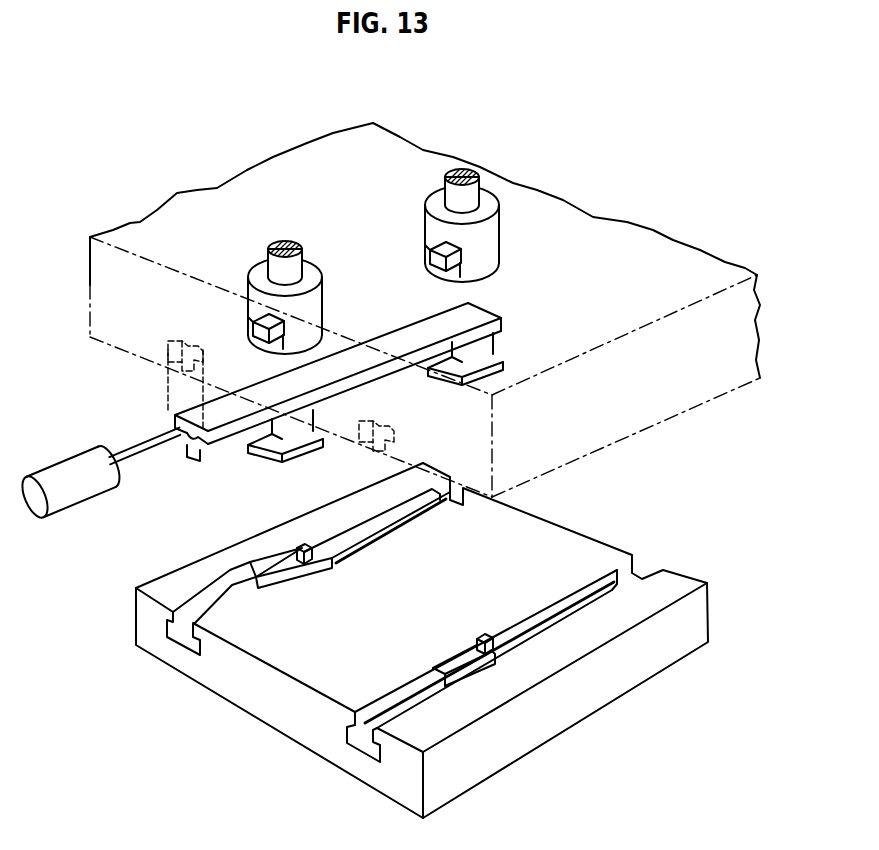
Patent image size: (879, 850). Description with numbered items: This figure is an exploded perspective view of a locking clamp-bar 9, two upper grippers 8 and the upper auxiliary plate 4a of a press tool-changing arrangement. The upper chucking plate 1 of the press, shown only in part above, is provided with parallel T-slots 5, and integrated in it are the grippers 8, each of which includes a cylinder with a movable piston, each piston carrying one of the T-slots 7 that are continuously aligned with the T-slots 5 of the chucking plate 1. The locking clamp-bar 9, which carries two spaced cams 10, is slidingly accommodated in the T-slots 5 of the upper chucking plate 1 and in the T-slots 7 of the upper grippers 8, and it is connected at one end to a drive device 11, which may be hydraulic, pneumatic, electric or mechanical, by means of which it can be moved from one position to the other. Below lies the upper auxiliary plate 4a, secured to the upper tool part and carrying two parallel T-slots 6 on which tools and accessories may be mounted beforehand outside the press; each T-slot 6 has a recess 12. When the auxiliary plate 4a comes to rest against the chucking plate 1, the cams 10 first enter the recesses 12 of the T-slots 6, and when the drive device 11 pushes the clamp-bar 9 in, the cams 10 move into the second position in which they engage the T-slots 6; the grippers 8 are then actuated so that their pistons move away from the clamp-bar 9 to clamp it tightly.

The upper chucking plate 1 is at (672, 263).
The upper auxiliary plate 4a is at (685, 590).
The T-slots 5 is at (180, 365).
The T-slots 6 is at (580, 592).
The T-slots 7 is at (441, 270).
The grippers 8 is at (490, 240).
The locking clamp-bar 9 is at (215, 446).
The cams 10 is at (505, 352).
The drive device 11 is at (80, 490).
The recesses 12 is at (445, 661).